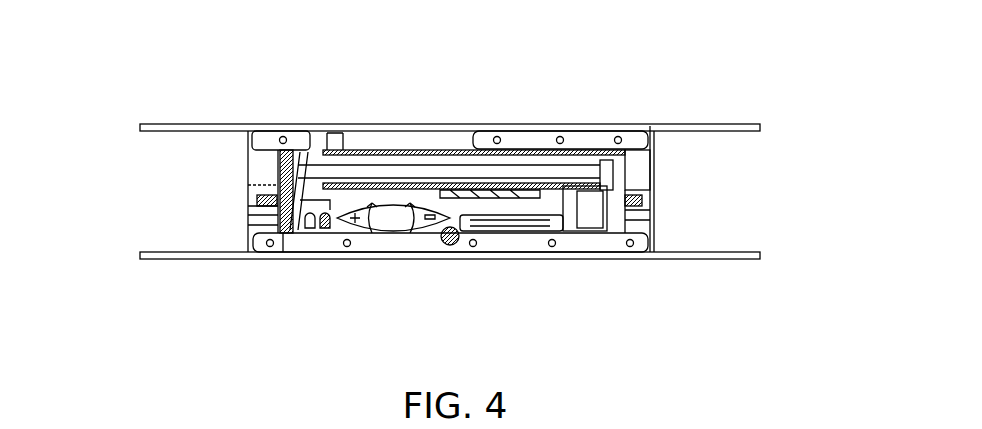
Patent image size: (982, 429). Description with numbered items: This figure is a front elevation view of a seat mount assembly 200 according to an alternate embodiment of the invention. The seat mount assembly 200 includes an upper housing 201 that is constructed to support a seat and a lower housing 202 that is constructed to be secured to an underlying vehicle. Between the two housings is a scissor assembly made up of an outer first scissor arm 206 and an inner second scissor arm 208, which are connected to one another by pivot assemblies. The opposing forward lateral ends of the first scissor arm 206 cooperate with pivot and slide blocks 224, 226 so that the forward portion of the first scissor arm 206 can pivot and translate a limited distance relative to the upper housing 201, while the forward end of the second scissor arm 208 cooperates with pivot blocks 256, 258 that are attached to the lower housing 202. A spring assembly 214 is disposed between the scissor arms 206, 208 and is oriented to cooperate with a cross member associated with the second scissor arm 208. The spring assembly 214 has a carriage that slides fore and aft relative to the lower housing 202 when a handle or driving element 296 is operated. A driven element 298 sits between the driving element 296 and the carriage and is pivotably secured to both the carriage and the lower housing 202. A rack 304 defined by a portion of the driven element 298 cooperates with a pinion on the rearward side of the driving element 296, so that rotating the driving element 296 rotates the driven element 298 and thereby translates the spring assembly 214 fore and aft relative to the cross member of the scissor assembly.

The seat mount assembly 200 is at (712, 61).
The upper housing 201 is at (728, 124).
The lower housing 202 is at (700, 252).
The first scissor arm 206 is at (580, 173).
The second scissor arm 208 is at (478, 158).
The spring assembly 214 is at (541, 243).
The pivot and slide block 224 is at (648, 174).
The pivot and slide block 226 is at (258, 168).
The pivot block 256 is at (588, 222).
The pivot block 258 is at (292, 205).
The driving element 296 is at (392, 227).
The driven element 298 is at (334, 207).
The rack 304 is at (316, 228).